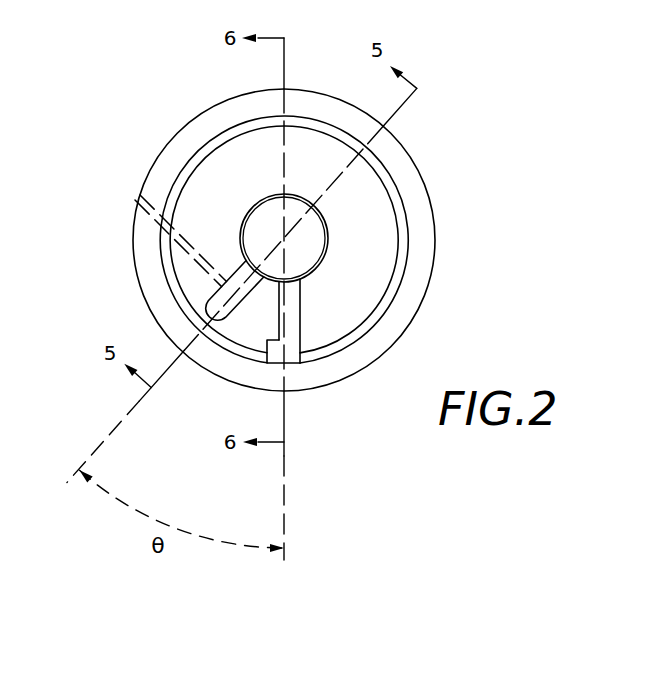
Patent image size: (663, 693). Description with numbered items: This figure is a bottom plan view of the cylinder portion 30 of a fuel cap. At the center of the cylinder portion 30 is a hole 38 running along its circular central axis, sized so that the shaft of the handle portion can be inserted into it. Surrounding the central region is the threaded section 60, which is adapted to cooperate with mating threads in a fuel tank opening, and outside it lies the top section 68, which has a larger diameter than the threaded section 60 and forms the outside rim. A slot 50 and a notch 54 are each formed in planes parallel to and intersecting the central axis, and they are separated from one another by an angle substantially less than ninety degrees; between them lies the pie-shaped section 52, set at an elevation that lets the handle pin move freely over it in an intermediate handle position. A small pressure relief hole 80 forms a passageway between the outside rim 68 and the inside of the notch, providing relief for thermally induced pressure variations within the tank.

The cylinder portion 30 is at (416, 127).
The hole 38 is at (304, 246).
The slot 50 is at (300, 348).
The pie-shaped section 52 is at (263, 318).
The notch 54 is at (206, 305).
The threaded section 60 is at (203, 145).
The top section 68 is at (135, 265).
The pressure relief hole 80 is at (157, 218).